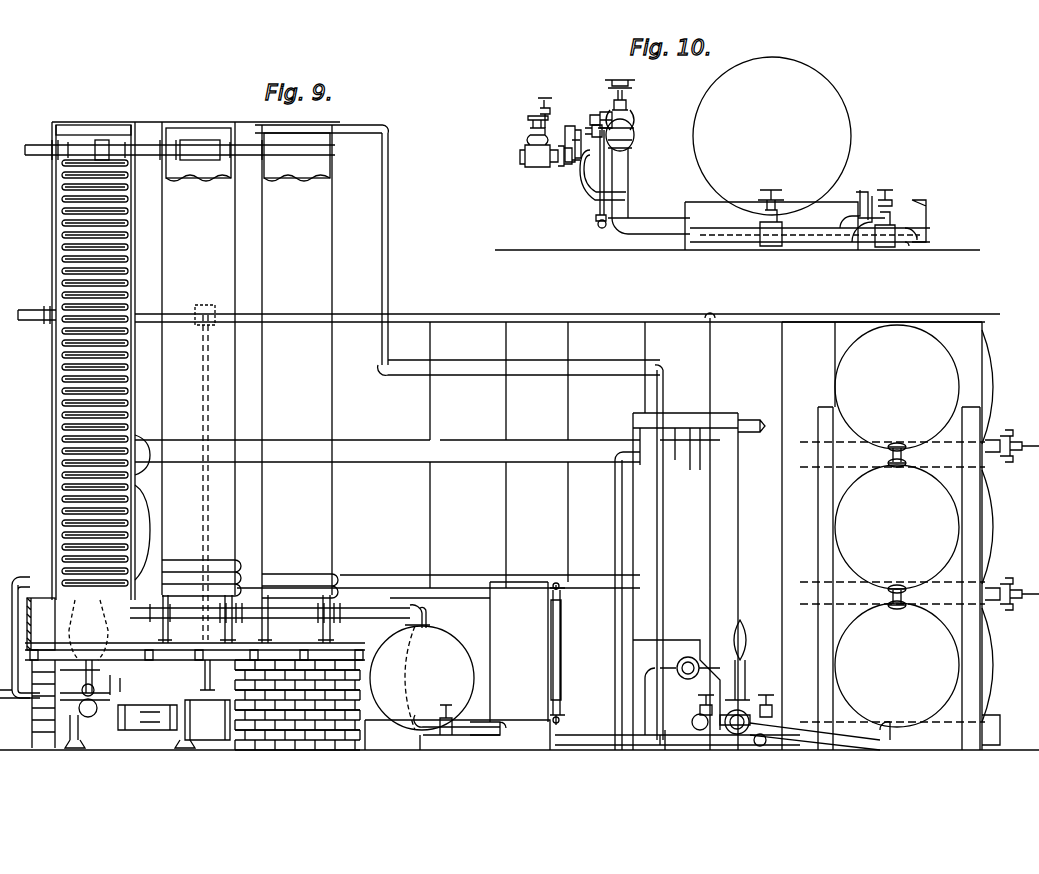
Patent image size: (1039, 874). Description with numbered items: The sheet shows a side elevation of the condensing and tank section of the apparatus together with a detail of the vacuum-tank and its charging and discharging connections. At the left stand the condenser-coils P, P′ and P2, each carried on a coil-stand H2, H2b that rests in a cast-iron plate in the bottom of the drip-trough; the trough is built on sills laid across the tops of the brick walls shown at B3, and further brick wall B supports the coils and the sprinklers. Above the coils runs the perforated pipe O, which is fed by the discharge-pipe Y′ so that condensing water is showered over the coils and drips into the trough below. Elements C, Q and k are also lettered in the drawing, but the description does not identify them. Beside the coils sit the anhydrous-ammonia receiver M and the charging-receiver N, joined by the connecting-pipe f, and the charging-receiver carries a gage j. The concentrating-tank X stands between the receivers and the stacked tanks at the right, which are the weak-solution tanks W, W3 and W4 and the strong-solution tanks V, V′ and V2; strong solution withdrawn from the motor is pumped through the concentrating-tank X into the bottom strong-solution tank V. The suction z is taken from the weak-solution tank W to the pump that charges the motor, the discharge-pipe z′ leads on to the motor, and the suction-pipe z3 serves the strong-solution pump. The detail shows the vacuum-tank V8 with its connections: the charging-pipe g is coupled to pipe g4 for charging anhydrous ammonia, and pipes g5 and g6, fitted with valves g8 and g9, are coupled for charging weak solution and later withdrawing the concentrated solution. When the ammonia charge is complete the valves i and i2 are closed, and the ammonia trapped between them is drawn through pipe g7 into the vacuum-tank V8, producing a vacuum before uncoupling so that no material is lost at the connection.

In FIG. 9, the coil-stand H2 is at (56, 440).
In FIG. 9, the perforated pipe O is at (145, 150).
In FIG. 9, the condenser-coil P′ is at (185, 568).
In FIG. 9, the condenser-coil P2 is at (290, 590).
In FIG. 9, the discharge-pipe Y′ is at (519, 250).
In FIG. 9, the condenser-coil P is at (37, 315).
In FIG. 9, the brick wall B3 is at (280, 662).
In FIG. 9, the brick wall B is at (519, 716).
In FIG. 9, the bottom pipe C is at (20, 700).
In FIG. 9, the furnace machinery Q is at (115, 674).
In FIG. 9, the coil-stand H2b is at (160, 604).
In FIG. 9, the anhydrous-ammonia receiver M is at (422, 667).
In FIG. 9, the valve k is at (450, 700).
In FIG. 9, the connecting-pipe f is at (470, 728).
In FIG. 9, the charging-receiver N is at (457, 666).
In FIG. 9, the gage j is at (565, 665).
In FIG. 9, the concentrating-tank X is at (690, 557).
In FIG. 9, the weak-solution tank W is at (897, 396).
In FIG. 9, the weak-solution tank W3 is at (897, 537).
In FIG. 9, the weak-solution tank W4 is at (897, 665).
In FIG. 9, the strong-solution tank V2 is at (1010, 396).
In FIG. 9, the strong-solution tank V′ is at (1010, 540).
In FIG. 9, the strong-solution tank V is at (1003, 665).
In FIG. 10, the vacuum-tank V8 is at (771, 153).
In FIG. 10, the suction-pipe z3 is at (790, 245).
In FIG. 10, the discharge-pipe z′ is at (815, 242).
In FIG. 10, the suction pipe z is at (894, 218).
In FIG. 10, the weak-solution charging pipe g6 is at (660, 255).
In FIG. 10, the valve i is at (620, 92).
In FIG. 10, the valve g9 is at (622, 107).
In FIG. 10, the valve g8 is at (535, 110).
In FIG. 10, the valve i2 is at (552, 100).
In FIG. 10, the charging pipe g4 is at (568, 130).
In FIG. 10, the weak-solution charging pipe g5 is at (566, 170).
In FIG. 10, the charging-pipe g is at (596, 124).
In FIG. 10, the pipe g7 is at (585, 192).